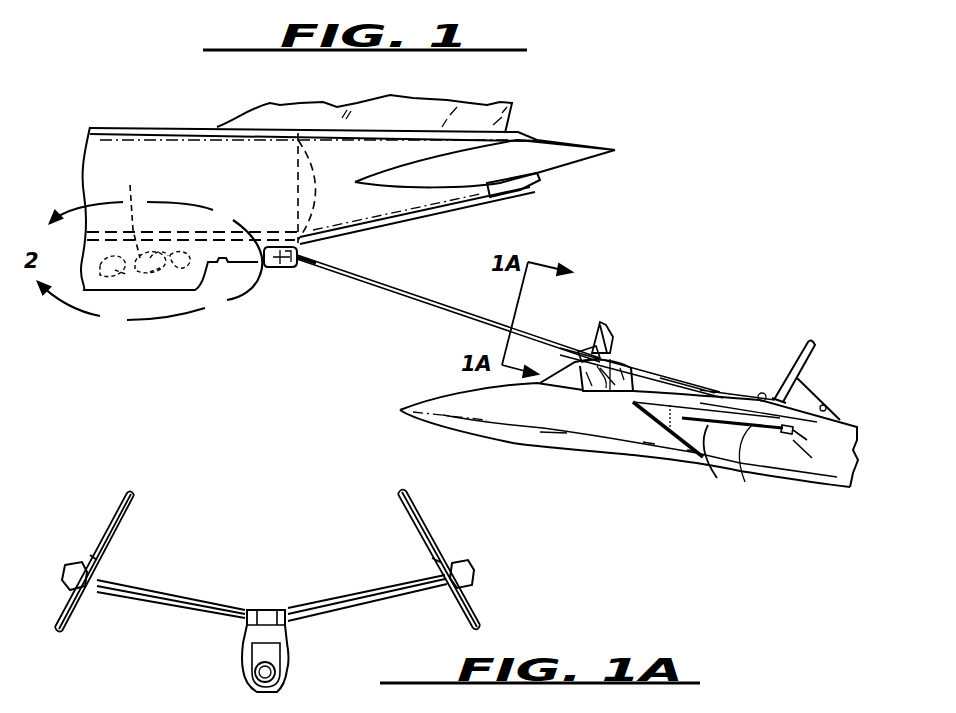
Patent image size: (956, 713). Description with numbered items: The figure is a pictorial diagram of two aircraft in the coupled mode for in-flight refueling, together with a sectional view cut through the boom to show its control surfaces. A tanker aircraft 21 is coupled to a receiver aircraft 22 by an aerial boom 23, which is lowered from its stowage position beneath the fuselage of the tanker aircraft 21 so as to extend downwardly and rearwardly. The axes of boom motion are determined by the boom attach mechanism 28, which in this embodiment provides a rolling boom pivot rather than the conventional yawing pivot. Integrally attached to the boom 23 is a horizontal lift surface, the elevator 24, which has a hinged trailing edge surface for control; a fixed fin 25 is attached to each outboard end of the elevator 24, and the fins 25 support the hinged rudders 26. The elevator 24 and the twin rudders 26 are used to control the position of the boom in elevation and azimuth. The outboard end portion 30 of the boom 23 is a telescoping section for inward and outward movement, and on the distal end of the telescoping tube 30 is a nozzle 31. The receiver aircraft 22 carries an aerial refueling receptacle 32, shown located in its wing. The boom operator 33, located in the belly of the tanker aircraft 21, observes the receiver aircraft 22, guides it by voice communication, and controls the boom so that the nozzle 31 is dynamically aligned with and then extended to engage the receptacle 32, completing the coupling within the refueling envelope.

In FIG. 1, the tanker aircraft 21 is at (140, 113).
In FIG. 1, the receiver aircraft 22 is at (750, 350).
In FIG. 1, the aerial boom 23 is at (397, 287).
In FIG. 1A, the aerial boom 23 is at (293, 663).
In FIG. 1A, the elevator 24 is at (320, 603).
In FIG. 1, the fixed fin 25 is at (580, 340).
In FIG. 1A, the fixed fin 25 is at (70, 620).
In FIG. 1, the hinged rudder 26 is at (610, 327).
In FIG. 1A, the hinged rudder 26 is at (130, 514).
In FIG. 1, the boom attach mechanism 28 is at (283, 267).
In FIG. 1, the telescoping section 30 is at (722, 470).
In FIG. 1, the nozzle 31 is at (783, 440).
In FIG. 1, the aerial refueling receptacle 32 is at (806, 444).
In FIG. 1, the boom operator 33 is at (124, 210).